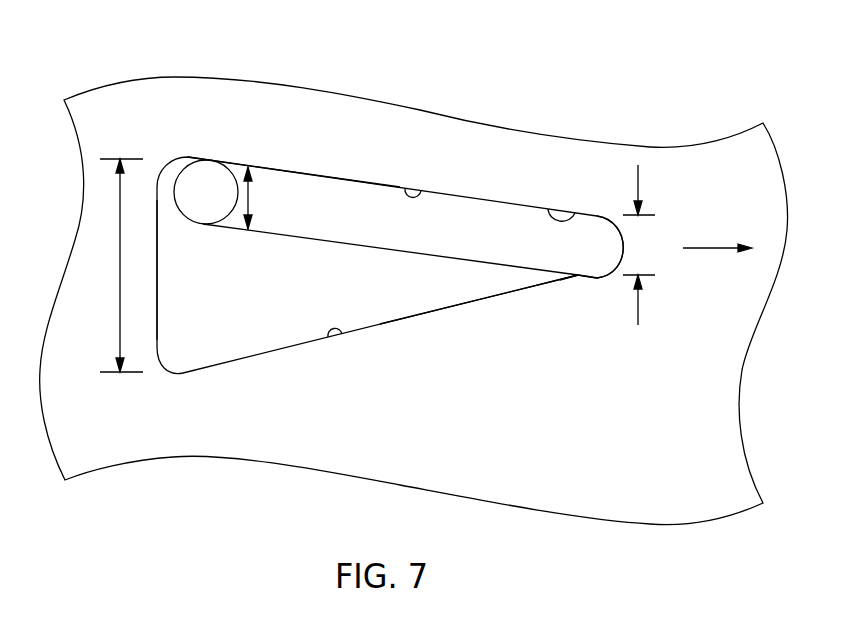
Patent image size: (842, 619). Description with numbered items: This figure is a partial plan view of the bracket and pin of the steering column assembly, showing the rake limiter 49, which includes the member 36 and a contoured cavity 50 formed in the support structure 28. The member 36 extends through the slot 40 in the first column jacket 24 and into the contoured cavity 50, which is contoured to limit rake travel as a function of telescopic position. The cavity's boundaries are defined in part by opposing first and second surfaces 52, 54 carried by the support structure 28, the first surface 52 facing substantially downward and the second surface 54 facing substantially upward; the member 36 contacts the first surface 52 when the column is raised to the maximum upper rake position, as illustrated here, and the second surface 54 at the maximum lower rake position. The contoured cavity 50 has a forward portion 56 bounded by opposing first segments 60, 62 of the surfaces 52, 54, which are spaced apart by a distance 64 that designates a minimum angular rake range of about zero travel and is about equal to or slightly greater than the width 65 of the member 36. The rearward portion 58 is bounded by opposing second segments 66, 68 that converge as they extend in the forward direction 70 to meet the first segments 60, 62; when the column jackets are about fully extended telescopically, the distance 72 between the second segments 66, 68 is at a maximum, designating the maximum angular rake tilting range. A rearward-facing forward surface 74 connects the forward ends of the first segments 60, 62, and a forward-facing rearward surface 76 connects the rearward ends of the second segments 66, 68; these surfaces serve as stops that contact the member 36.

The first column jacket 24 is at (290, 335).
The support structure 28 is at (368, 468).
The member 36 is at (214, 161).
The slot 40 is at (405, 230).
The rake limiter 49 is at (200, 104).
The contoured cavity 50 is at (312, 280).
The first surface 52 is at (344, 198).
The second surface 54 is at (379, 317).
The forward portion 56 is at (573, 257).
The rearward portion 58 is at (200, 319).
The first segment 60 is at (572, 222).
The first segment 62 is at (577, 277).
The distance 64 is at (637, 306).
The width 65 is at (250, 196).
The second segment 66 is at (422, 189).
The second segment 68 is at (340, 334).
The forward direction 70 is at (720, 252).
The distance 72 is at (118, 300).
The forward surface 74 is at (617, 237).
The rearward surface 76 is at (158, 277).